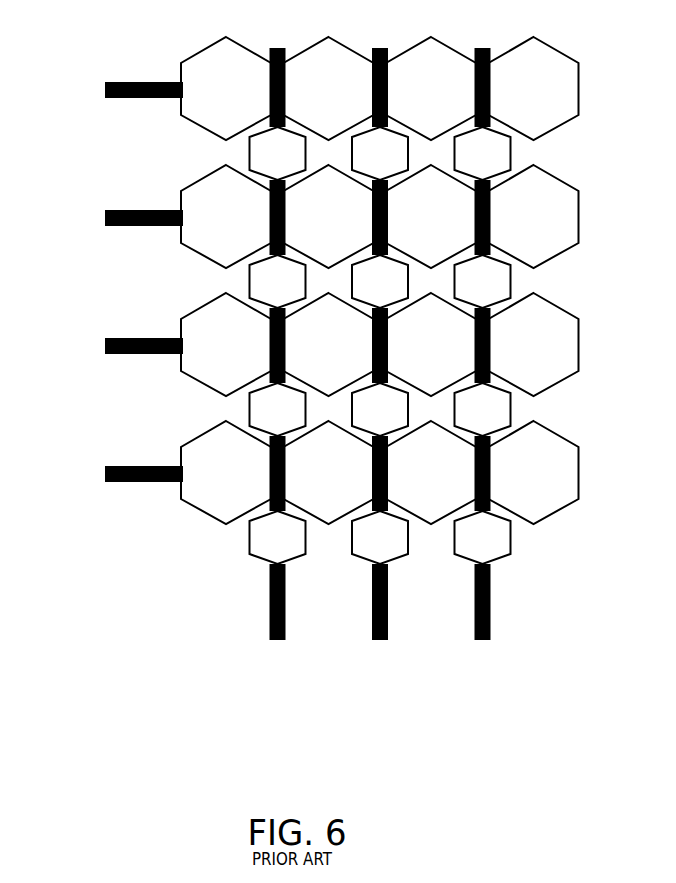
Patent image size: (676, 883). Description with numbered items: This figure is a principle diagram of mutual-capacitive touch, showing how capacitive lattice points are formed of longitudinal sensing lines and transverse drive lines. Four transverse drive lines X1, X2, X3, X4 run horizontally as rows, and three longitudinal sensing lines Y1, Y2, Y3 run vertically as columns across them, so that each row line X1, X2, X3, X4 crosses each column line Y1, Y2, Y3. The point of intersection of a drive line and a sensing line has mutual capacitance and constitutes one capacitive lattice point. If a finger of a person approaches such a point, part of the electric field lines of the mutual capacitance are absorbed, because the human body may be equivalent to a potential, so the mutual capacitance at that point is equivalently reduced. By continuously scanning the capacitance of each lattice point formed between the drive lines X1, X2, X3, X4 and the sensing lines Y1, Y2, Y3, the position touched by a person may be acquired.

The transverse drive line X1 is at (315, 88).
The transverse drive line X2 is at (315, 216).
The transverse drive line X3 is at (315, 344).
The transverse drive line X4 is at (315, 472).
The longitudinal sensing line Y1 is at (278, 377).
The longitudinal sensing line Y2 is at (380, 377).
The longitudinal sensing line Y3 is at (483, 377).